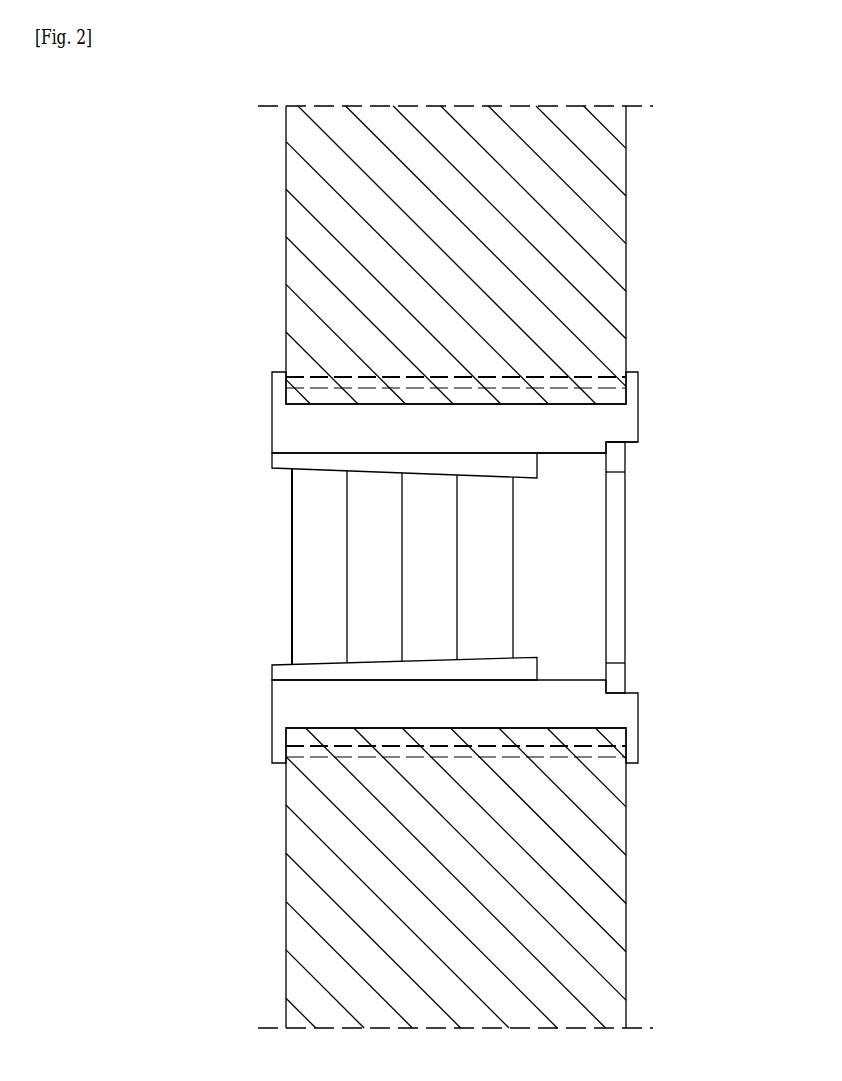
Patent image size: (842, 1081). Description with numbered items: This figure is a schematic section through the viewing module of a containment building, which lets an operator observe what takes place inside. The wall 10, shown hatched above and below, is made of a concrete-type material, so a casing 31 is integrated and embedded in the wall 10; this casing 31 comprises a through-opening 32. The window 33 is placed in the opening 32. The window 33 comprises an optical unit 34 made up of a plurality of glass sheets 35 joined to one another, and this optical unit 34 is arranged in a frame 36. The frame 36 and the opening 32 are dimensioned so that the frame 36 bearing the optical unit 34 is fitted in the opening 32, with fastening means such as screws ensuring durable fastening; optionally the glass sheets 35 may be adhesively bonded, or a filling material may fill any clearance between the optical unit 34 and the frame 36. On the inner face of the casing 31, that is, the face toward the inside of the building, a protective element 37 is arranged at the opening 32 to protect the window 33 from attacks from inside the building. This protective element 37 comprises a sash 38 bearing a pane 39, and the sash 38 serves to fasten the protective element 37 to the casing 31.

The wall 10 is at (600, 185).
The casing 31 is at (278, 397).
The opening 32 is at (568, 470).
The window 33 is at (244, 507).
The optical unit 34 is at (272, 602).
The glass sheet 35 is at (318, 548).
The frame 36 is at (283, 672).
The protective element 37 is at (682, 567).
The sash 38 is at (620, 457).
The pane 39 is at (610, 610).